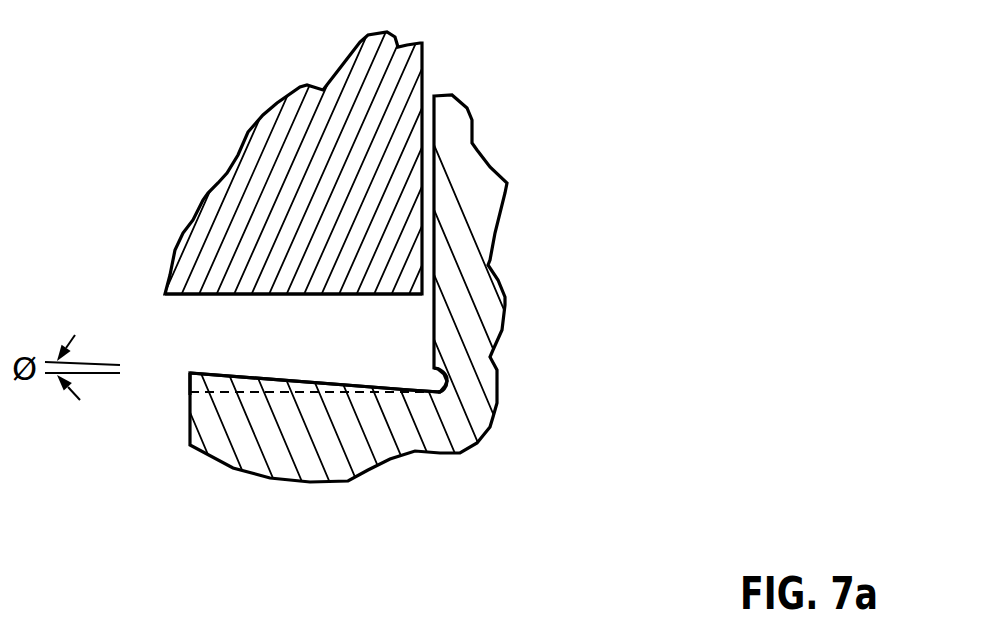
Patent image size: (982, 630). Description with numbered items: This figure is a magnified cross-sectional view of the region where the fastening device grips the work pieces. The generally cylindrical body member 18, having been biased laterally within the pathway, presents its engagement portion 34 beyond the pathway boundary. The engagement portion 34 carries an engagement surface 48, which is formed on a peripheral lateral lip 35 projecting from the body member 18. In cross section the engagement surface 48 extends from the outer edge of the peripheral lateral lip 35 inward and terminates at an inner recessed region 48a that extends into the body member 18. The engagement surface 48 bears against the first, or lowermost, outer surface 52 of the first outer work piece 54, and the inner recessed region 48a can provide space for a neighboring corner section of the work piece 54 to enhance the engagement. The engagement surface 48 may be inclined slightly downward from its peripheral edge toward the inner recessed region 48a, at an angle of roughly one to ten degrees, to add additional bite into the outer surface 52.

The body member 18 is at (537, 134).
The engagement portion 34 is at (169, 455).
The peripheral lateral lip 35 is at (173, 381).
The engagement surface 48 is at (242, 375).
The inner recessed region 48a is at (421, 375).
The first outer surface 52 is at (328, 295).
The first outer work piece 54 is at (212, 135).